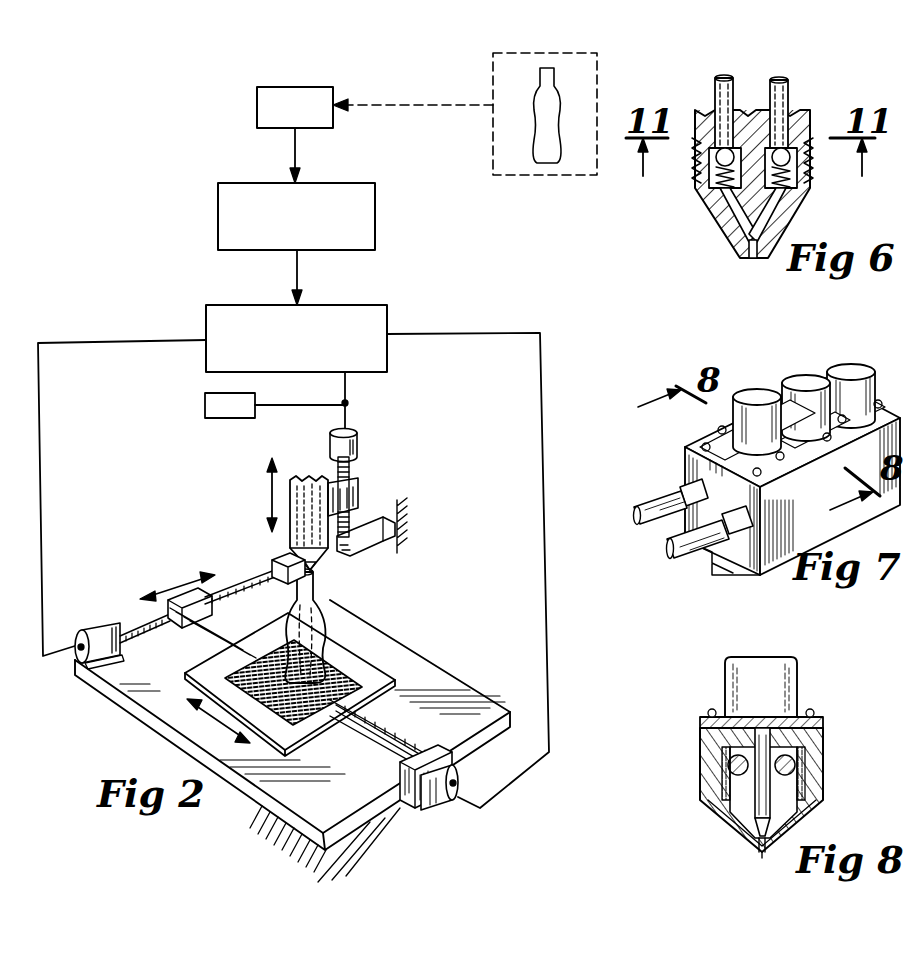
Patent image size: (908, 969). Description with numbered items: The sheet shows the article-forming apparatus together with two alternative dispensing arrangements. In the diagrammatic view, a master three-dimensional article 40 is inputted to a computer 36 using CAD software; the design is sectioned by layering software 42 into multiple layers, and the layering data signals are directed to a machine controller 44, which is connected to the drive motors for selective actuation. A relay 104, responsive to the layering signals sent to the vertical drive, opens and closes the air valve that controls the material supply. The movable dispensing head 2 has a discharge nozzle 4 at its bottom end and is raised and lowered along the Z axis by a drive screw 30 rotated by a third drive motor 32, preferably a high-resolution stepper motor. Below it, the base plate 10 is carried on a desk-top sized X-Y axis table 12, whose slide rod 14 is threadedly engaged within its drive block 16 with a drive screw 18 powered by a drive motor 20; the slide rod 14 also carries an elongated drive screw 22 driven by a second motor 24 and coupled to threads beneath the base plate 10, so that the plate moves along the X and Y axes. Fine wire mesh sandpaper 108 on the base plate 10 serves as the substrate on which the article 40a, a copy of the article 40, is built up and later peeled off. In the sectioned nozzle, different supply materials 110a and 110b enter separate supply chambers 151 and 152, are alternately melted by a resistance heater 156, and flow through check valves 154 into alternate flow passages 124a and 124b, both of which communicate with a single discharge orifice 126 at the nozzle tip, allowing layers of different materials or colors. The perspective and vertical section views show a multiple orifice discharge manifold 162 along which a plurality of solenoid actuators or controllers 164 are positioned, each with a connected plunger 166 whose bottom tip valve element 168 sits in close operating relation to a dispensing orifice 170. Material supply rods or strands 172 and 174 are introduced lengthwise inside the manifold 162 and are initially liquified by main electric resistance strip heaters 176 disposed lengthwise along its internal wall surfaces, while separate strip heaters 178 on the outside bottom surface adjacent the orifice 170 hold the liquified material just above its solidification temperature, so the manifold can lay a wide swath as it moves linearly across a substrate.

In FIG. 2, the dispensing head 2 is at (278, 540).
In FIG. 2, the discharge nozzle 4 is at (318, 559).
In FIG. 2, the base plate 10 is at (373, 667).
In FIG. 2, the X-Y axis table 12 is at (157, 718).
In FIG. 2, the slide rod 14 is at (205, 640).
In FIG. 2, the drive block 16 is at (200, 590).
In FIG. 2, the drive screw 18 is at (136, 620).
In FIG. 2, the drive motor 20 is at (96, 628).
In FIG. 2, the elongated drive screw 22 is at (388, 740).
In FIG. 2, the second motor 24 is at (440, 810).
In FIG. 2, the drive screw 30 is at (350, 471).
In FIG. 2, the third drive motor 32 is at (357, 445).
In FIG. 2, the computer 36 is at (257, 98).
In FIG. 2, the three-dimensional article 40 is at (537, 80).
In FIG. 2, the article 40a is at (315, 592).
In FIG. 2, the layering software 42 is at (218, 207).
In FIG. 2, the machine controller 44 is at (207, 305).
In FIG. 2, the relay 104 is at (205, 407).
In FIG. 2, the wire mesh sandpaper 108 is at (343, 670).
In FIG. 6, the supply material 110a is at (786, 88).
In FIG. 6, the supply material 110b is at (722, 78).
In FIG. 6, the flow passage 124a is at (775, 206).
In FIG. 6, the flow passage 124b is at (746, 216).
In FIG. 6, the discharge orifice 126 is at (753, 260).
In FIG. 6, the supply chamber 151 is at (716, 112).
In FIG. 6, the supply chamber 152 is at (788, 106).
In FIG. 6, the check valve 154 is at (712, 192).
In FIG. 6, the resistance heater 156 is at (694, 166).
In FIG. 7, the multiple orifice discharge manifold 162 is at (674, 460).
In FIG. 8, the multiple orifice discharge manifold 162 is at (688, 741).
In FIG. 7, the controller 164 is at (800, 380).
In FIG. 8, the controller 164 is at (790, 658).
In FIG. 8, the plunger 166 is at (757, 813).
In FIG. 8, the valve element 168 is at (757, 846).
In FIG. 8, the dispensing orifice 170 is at (764, 856).
In FIG. 7, the material supply rod 172 is at (652, 508).
In FIG. 8, the material supply rod 172 is at (728, 766).
In FIG. 7, the material supply rod 174 is at (690, 550).
In FIG. 8, the material supply rod 174 is at (792, 758).
In FIG. 8, the threaded insert 176 is at (724, 788).
In FIG. 7, the strip heater 178 is at (708, 565).
In FIG. 8, the strip heater 178 is at (730, 825).